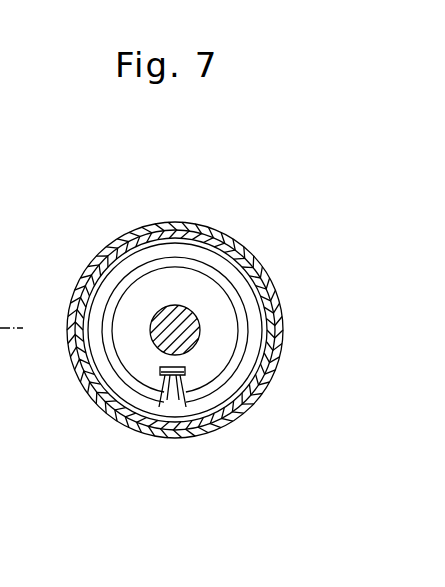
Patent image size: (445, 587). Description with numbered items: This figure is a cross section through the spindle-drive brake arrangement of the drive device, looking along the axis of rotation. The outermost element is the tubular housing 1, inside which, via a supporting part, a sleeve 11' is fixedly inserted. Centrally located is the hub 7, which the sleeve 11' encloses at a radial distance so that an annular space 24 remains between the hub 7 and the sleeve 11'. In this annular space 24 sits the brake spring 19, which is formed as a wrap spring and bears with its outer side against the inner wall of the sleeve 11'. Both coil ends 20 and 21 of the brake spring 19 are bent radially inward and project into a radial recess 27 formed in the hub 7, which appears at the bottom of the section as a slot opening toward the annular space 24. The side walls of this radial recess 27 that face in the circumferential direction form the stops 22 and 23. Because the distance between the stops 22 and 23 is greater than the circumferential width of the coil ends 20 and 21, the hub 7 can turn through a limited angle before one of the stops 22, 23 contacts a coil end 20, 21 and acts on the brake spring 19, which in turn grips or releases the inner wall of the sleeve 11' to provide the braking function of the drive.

The tubular housing 1 is at (280, 335).
The hub 7 is at (217, 338).
The sleeve 11' is at (177, 287).
The brake spring 19 is at (240, 286).
The coil end 20 is at (165, 378).
The coil end 21 is at (178, 378).
The stop 22 is at (125, 402).
The stop 23 is at (230, 405).
The annular space 24 is at (227, 373).
The radial recess 27 is at (168, 367).